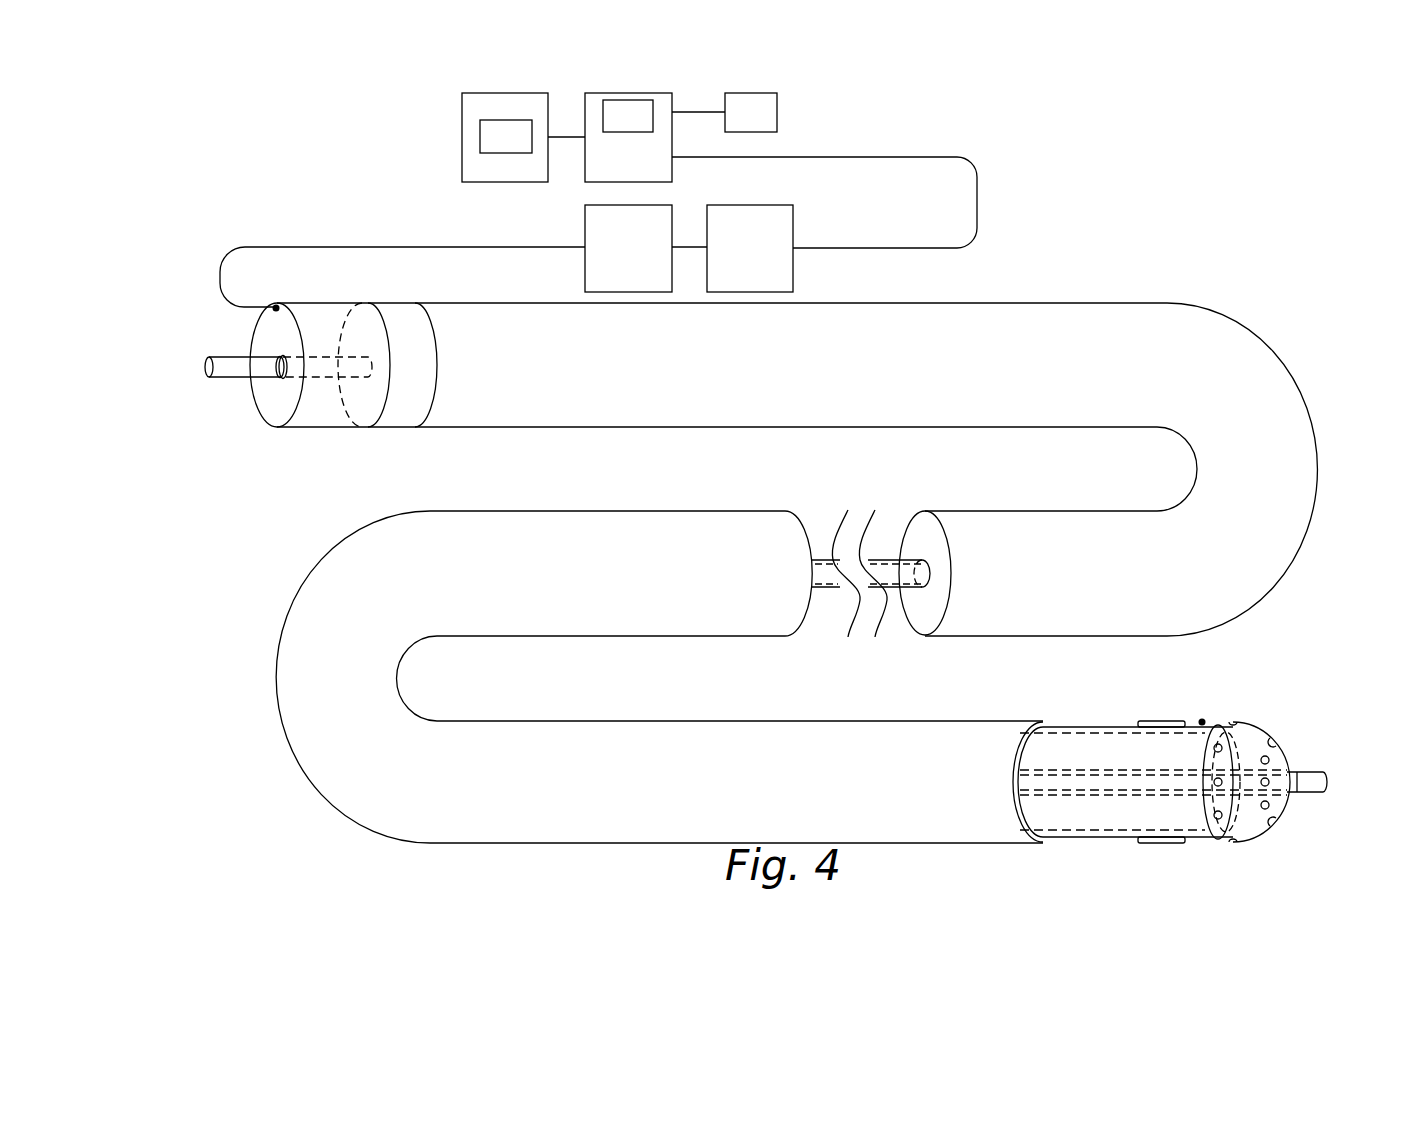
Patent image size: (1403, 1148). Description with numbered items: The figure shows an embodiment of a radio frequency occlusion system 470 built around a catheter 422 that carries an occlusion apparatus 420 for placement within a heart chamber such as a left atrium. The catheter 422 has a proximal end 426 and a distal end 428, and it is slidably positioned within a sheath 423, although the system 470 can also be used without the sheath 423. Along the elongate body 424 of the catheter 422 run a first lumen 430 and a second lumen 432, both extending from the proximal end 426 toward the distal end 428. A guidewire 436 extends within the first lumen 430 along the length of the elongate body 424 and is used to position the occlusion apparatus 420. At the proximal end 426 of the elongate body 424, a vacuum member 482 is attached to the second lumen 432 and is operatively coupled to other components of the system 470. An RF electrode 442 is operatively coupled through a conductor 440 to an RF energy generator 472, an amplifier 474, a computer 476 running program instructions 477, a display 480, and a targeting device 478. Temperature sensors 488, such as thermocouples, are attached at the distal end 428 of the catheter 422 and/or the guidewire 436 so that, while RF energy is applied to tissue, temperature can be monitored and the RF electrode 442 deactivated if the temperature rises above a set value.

The occlusion apparatus 420 is at (1313, 710).
The catheter 422 is at (383, 307).
The sheath 423 is at (540, 304).
The elongate body 424 is at (405, 302).
The proximal end 426 is at (367, 447).
The distal end 428 is at (1215, 848).
The first lumen 430 is at (270, 378).
The second lumen 432 is at (268, 325).
The guidewire 436 is at (236, 356).
The conductor 440 is at (427, 247).
The RF electrode 442 is at (1155, 722).
The radio frequency occlusion system 470 is at (1210, 212).
The RF energy generator 472 is at (646, 248).
The amplifier 474 is at (750, 248).
The computer 476 is at (762, 170).
The program instructions 477 is at (628, 116).
The targeting device 478 is at (724, 112).
The display 480 is at (505, 183).
The vacuum member 482 is at (307, 303).
The temperature sensors 488 is at (1202, 722).